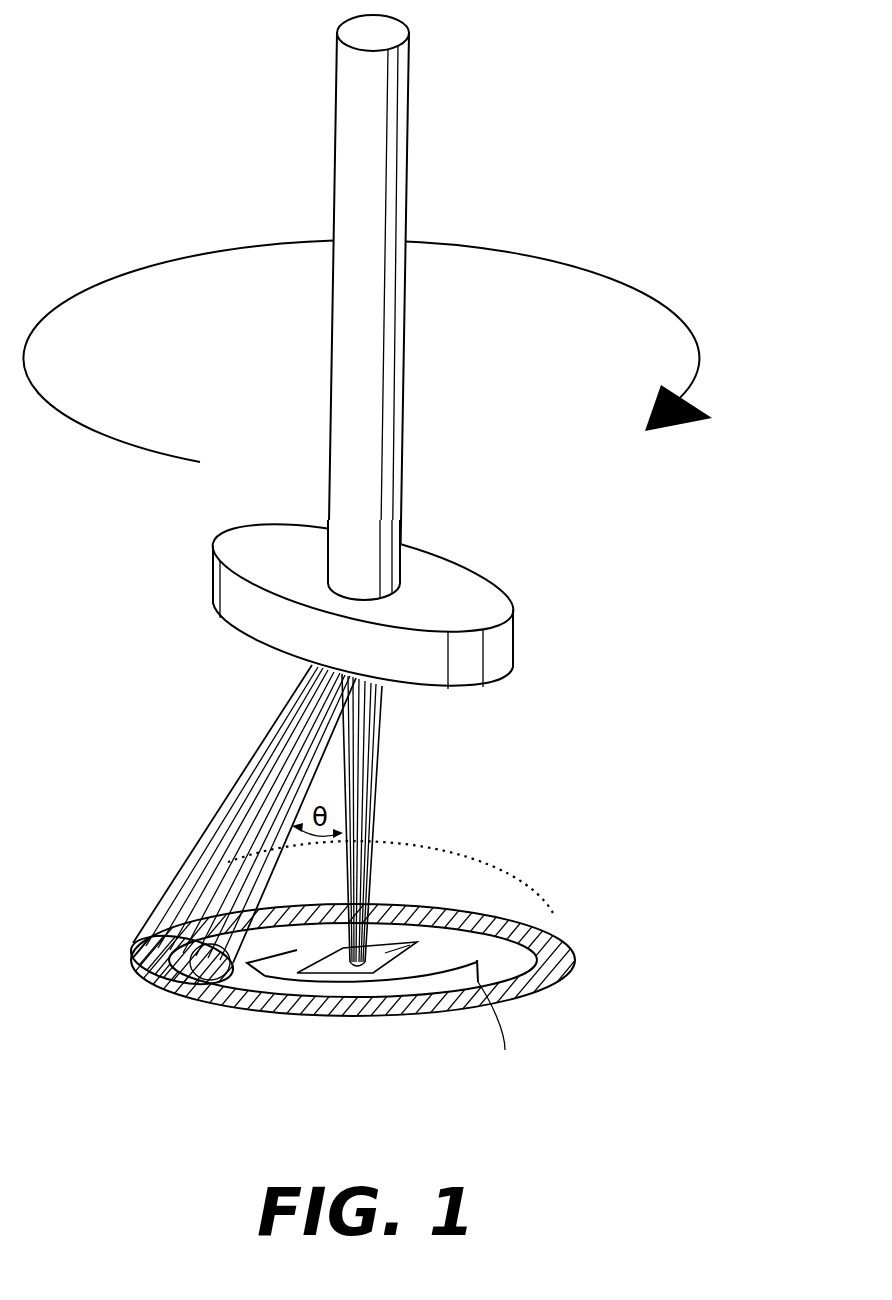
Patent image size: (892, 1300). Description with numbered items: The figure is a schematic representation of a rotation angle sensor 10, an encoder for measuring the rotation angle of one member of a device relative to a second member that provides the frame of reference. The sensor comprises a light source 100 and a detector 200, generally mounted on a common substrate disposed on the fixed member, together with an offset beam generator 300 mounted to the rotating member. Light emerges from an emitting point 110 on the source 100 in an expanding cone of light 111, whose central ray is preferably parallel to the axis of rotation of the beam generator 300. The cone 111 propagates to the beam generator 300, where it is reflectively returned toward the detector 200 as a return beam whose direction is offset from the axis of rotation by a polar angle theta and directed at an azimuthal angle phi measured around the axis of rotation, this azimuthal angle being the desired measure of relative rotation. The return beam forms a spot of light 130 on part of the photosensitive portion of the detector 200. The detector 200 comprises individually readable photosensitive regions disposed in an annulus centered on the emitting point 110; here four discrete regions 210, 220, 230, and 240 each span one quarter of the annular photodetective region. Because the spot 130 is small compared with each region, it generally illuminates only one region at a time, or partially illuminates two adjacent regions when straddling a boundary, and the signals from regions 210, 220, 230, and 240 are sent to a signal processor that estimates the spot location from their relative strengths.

The rotation angle sensor 10 is at (140, 815).
The light source 100 is at (465, 912).
The emitting point 110 is at (377, 977).
The expanding cone of light 111 is at (380, 733).
The spot of light 130 is at (130, 953).
The detector 200 is at (368, 948).
The photosensitive region 210 is at (243, 1012).
The photosensitive region 220 is at (327, 1017).
The photosensitive region 230 is at (553, 940).
The photosensitive region 240 is at (308, 905).
The offset beam generator 300 is at (503, 597).